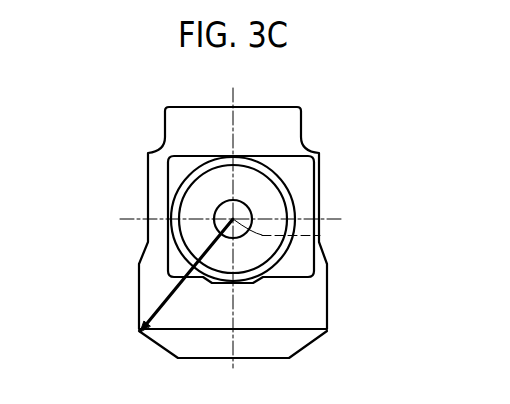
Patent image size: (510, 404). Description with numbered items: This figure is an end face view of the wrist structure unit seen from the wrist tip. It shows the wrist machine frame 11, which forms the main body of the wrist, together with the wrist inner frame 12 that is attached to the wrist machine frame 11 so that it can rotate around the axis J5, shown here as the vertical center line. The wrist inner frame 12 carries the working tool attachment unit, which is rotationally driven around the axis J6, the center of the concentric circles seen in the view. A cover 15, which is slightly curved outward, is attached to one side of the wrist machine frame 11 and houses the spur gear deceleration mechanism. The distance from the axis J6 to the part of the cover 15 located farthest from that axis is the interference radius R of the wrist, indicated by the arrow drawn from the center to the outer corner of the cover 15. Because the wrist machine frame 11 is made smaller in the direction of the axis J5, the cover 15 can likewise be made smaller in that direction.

The wrist machine frame 11 is at (160, 172).
The wrist inner frame 12 is at (290, 169).
The cover 15 is at (182, 342).
The axis J5 is at (231, 217).
The axis J6 is at (320, 236).
The interference radius R is at (167, 295).